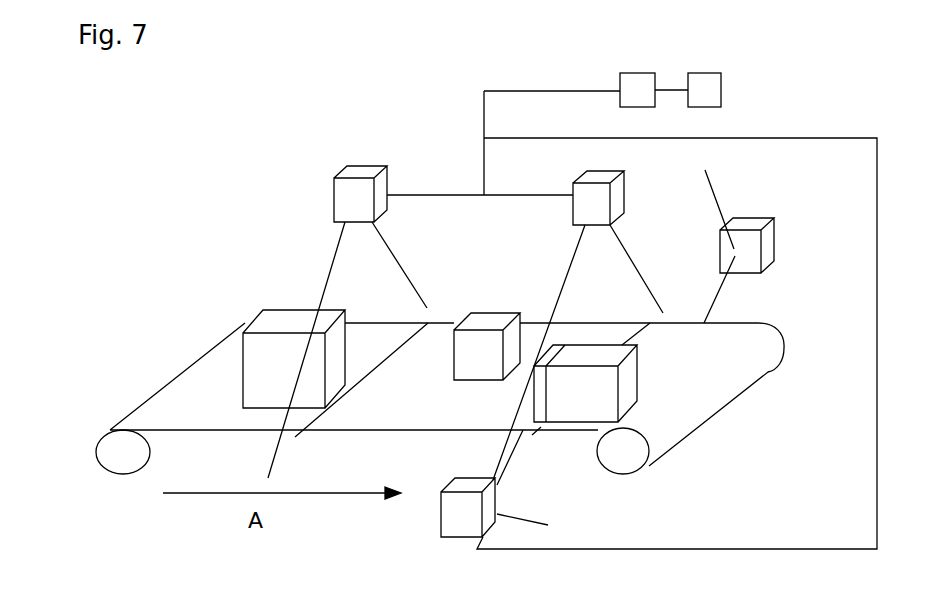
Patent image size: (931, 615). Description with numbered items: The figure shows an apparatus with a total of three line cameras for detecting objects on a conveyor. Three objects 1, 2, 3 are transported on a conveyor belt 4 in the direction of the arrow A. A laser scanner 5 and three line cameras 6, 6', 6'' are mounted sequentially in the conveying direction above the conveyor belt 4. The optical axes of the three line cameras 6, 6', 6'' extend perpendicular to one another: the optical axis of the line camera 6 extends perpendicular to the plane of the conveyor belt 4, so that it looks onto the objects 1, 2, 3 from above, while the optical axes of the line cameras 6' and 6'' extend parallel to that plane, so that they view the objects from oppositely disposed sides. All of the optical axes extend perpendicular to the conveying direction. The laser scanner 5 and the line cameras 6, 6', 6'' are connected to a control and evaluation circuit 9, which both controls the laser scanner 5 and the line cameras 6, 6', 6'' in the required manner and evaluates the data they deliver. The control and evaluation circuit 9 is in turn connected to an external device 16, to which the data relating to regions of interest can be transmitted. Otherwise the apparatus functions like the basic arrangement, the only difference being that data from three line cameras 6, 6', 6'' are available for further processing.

The object 1 is at (600, 387).
The object 2 is at (477, 367).
The object 3 is at (262, 378).
The conveyor belt 4 is at (741, 337).
The laser scanner 5 is at (356, 203).
The line camera 6 is at (578, 328).
The line camera 6' is at (768, 246).
The line camera 6'' is at (494, 539).
The control and evaluation circuit 9 is at (632, 85).
The external device 16 is at (728, 92).